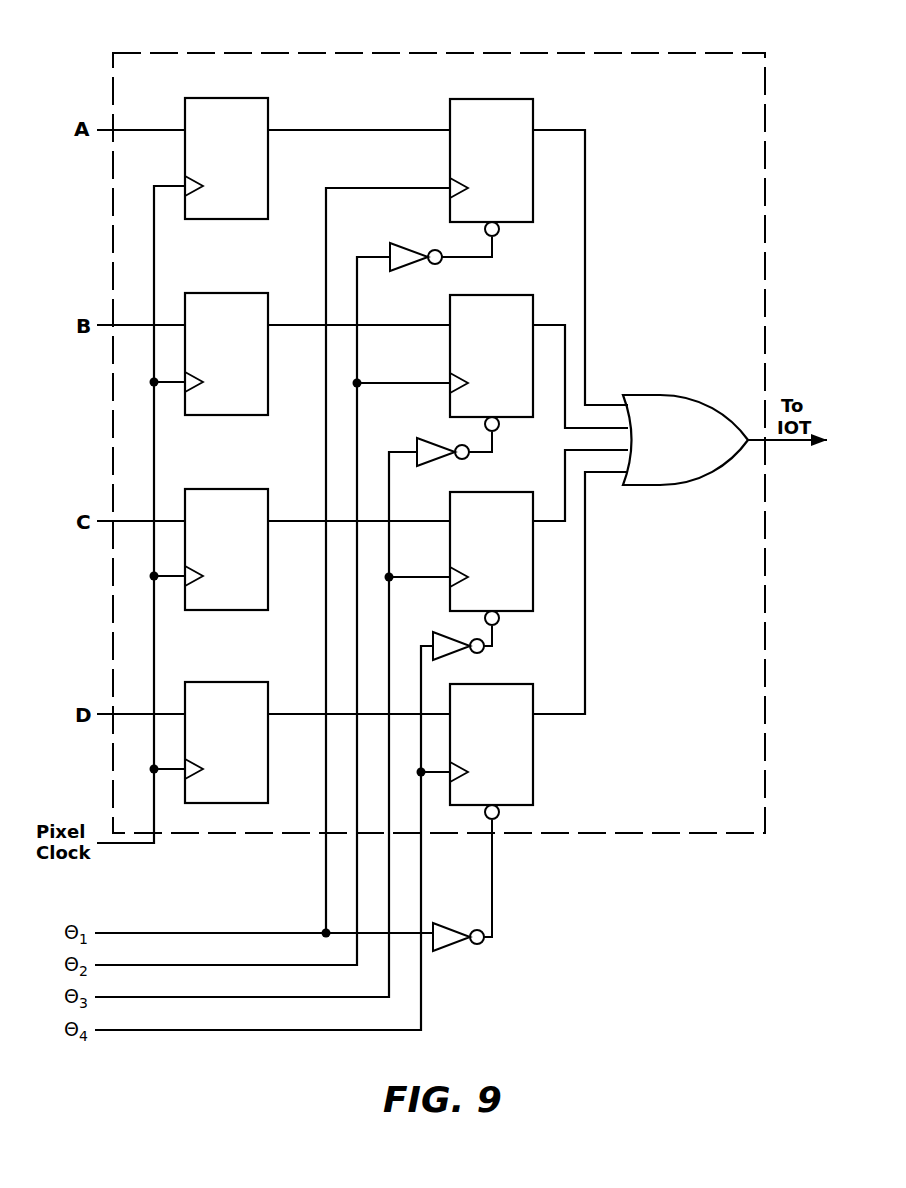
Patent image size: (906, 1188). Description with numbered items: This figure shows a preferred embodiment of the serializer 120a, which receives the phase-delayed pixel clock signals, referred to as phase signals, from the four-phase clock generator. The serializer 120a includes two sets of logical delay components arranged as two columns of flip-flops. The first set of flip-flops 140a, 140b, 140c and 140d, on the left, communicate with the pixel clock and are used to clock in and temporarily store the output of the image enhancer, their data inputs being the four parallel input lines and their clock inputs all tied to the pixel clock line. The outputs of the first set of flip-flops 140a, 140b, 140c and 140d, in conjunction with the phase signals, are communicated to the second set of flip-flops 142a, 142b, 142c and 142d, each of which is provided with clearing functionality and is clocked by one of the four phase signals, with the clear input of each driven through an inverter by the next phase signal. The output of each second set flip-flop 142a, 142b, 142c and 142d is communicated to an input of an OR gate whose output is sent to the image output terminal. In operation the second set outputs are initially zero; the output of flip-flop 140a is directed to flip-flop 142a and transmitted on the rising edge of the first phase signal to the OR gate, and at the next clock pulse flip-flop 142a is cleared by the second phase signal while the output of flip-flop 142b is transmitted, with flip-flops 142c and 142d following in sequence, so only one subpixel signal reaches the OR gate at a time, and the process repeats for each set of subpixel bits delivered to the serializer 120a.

The serializer 120a is at (440, 53).
The first set flip-flop 140a is at (227, 98).
The first set flip-flop 140b is at (227, 293).
The first set flip-flop 140c is at (227, 489).
The first set flip-flop 140d is at (227, 682).
The second set flip-flop 142a is at (493, 99).
The second set flip-flop 142b is at (493, 295).
The second set flip-flop 142c is at (493, 492).
The second set flip-flop 142d is at (493, 684).